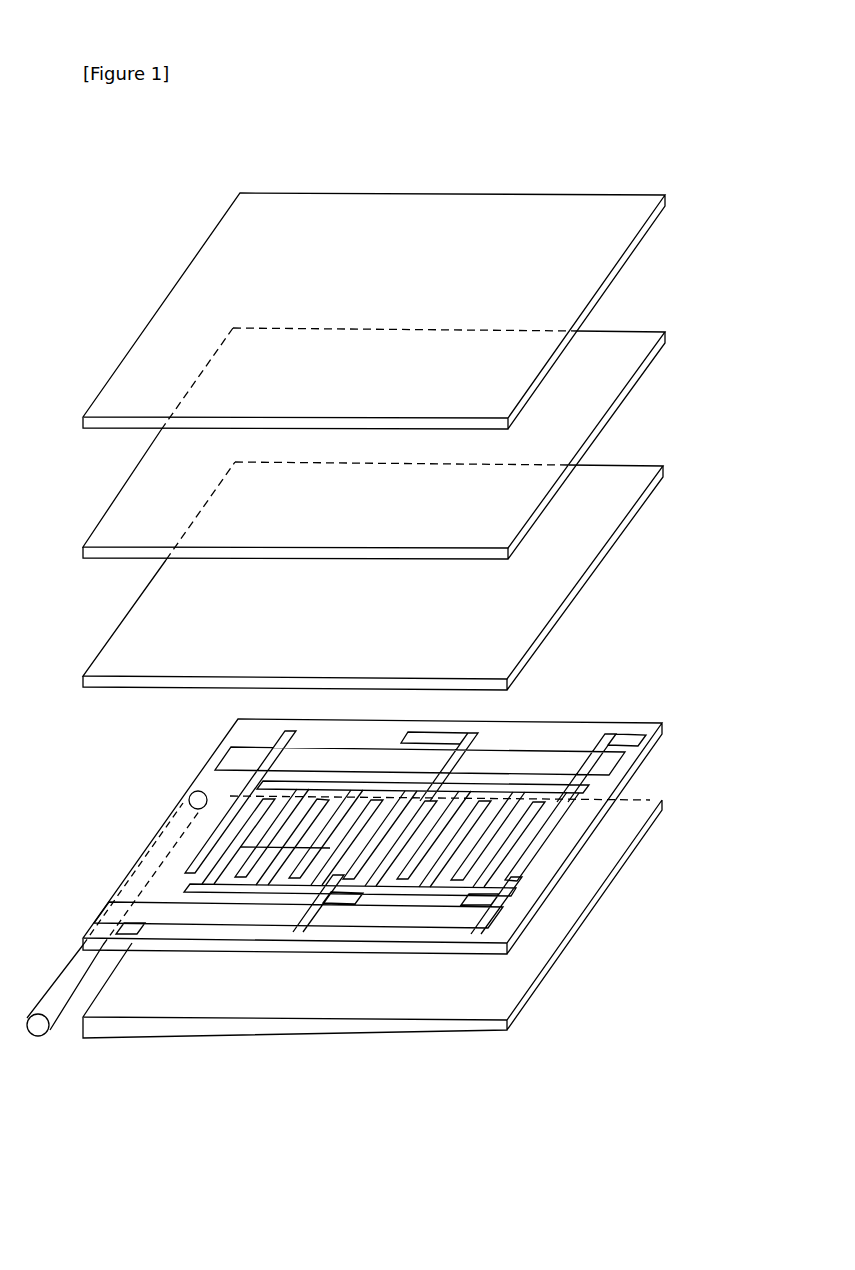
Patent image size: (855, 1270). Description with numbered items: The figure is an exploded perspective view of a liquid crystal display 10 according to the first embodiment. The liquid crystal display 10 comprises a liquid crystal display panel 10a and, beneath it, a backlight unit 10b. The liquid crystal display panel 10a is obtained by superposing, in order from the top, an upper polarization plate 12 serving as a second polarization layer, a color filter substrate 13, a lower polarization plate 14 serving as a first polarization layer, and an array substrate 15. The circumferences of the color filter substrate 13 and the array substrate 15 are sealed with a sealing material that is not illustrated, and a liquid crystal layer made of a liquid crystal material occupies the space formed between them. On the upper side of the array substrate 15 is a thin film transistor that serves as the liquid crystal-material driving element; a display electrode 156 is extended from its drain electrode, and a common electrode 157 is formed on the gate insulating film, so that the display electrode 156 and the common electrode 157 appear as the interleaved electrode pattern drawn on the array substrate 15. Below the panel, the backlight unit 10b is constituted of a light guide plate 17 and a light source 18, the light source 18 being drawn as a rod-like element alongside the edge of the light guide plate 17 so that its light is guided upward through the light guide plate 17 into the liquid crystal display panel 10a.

The liquid crystal display 10 is at (403, 659).
The liquid crystal display panel 10a is at (431, 594).
The backlight unit 10b is at (356, 963).
The upper polarization plate 12 is at (637, 240).
The color filter substrate 13 is at (640, 370).
The lower polarization plate 14 is at (617, 533).
The array substrate 15 is at (393, 857).
The light guide plate 17 is at (622, 858).
The light source 18 is at (107, 1080).
The display electrode 156 is at (235, 870).
The common electrode 157 is at (257, 870).